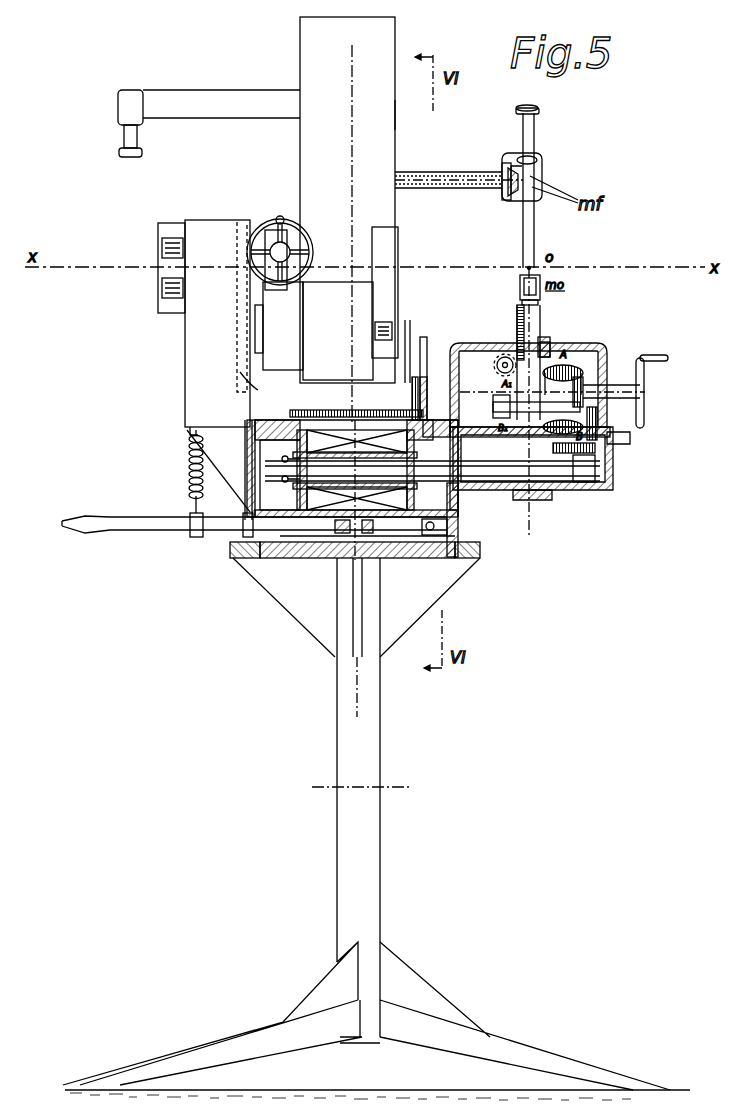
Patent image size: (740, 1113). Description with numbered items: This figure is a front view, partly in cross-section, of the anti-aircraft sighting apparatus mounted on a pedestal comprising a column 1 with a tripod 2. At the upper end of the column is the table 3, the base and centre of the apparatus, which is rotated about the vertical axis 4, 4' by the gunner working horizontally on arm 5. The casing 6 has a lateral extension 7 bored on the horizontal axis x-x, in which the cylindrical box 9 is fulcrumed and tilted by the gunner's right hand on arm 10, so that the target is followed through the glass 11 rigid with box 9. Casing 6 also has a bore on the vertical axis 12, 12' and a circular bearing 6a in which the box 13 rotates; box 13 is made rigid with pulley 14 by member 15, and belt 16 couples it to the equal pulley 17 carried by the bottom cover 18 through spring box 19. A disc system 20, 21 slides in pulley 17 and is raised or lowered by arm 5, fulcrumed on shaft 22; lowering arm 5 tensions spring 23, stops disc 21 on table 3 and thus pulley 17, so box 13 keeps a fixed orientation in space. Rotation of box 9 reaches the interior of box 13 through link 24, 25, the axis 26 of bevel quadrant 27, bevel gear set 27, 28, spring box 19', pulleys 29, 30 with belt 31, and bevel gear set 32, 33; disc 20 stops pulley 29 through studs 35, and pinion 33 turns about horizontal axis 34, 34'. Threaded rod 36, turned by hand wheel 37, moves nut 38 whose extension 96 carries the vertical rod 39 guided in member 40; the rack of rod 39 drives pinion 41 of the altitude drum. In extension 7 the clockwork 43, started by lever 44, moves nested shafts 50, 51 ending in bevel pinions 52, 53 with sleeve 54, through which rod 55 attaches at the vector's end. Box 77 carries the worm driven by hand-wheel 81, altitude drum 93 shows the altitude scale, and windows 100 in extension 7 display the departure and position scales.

The column 1 is at (352, 755).
The tripod 2 is at (183, 1058).
The table 3 is at (283, 549).
The vertical axis 4 is at (347, 220).
The vertical axis 4' is at (326, 637).
The arm 5 is at (160, 523).
The casing 6 is at (613, 482).
The circular bearing 6a is at (672, 420).
The lateral extension 7 is at (196, 338).
The cylindrical box 9 is at (383, 115).
The arm 10 is at (218, 100).
The telescope 11 is at (128, 98).
The vertical axis 12 is at (546, 402).
The vertical axis 12' is at (547, 512).
The box 13 is at (482, 342).
The pulley 14 is at (503, 481).
The member 15 is at (460, 362).
The belt 16 is at (461, 493).
The pulley 17 is at (300, 485).
The bottom cover 18 is at (259, 559).
The spring box 19 is at (352, 468).
The spring box 19' is at (344, 415).
The disc 20 is at (386, 500).
The disc 21 is at (318, 558).
The shaft 22 is at (440, 532).
The tension spring 23 is at (190, 448).
The link 24 is at (398, 300).
The link 25 is at (412, 383).
The axis 26 is at (424, 362).
The bevel quadrant 27 is at (436, 414).
The bevel gear 28 is at (312, 410).
The pulley 29 is at (295, 455).
The pulley 30 is at (583, 458).
The belt 31 is at (455, 462).
The bevel gear-wheel 32 is at (597, 448).
The pinion 33 is at (598, 436).
The horizontal axis 34 is at (552, 384).
The horizontal axis 34' is at (640, 384).
The studs 35 is at (293, 478).
The threaded rod 36 is at (583, 368).
The hand wheel 37 is at (642, 359).
The nut 38 is at (524, 421).
The rod 39 is at (551, 341).
The member 40 is at (552, 344).
The pinion 41 is at (505, 354).
The clockwork 43 is at (259, 389).
The lever 44 is at (248, 493).
The shaft 50 is at (413, 170).
The shaft 51 is at (448, 180).
The bevel pinion 52 is at (511, 166).
The bevel pinion 53 is at (540, 160).
The sleeve 54 is at (517, 194).
The rod 55 is at (530, 240).
The box 77 is at (279, 326).
The hand-wheel 81 is at (279, 224).
The drum 93 is at (375, 334).
The extension 96 is at (493, 403).
The windows 100 is at (158, 252).